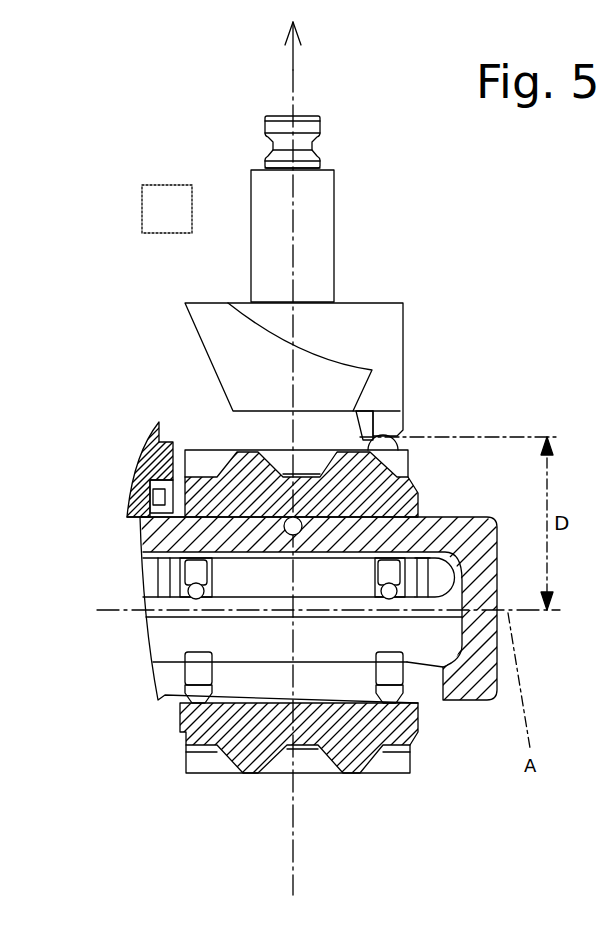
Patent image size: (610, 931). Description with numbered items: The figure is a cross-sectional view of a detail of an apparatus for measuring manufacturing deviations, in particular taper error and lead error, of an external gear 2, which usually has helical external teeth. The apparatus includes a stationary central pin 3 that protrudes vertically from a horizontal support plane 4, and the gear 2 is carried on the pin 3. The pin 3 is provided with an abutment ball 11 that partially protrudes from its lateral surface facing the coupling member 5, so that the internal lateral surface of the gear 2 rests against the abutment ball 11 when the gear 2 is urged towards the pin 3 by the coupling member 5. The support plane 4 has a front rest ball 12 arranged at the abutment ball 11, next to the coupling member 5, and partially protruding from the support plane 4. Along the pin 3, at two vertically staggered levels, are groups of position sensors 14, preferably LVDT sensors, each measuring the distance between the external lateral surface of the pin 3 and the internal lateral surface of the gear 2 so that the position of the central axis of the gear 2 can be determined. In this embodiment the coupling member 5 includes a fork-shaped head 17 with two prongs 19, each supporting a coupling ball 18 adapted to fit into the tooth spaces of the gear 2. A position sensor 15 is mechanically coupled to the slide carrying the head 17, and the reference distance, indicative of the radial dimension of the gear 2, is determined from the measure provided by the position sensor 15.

The external gear 2 is at (145, 729).
The stationary central pin 3 is at (472, 540).
The horizontal support plane 4 is at (150, 462).
The coupling member 5 is at (432, 234).
The abutment ball 11 is at (284, 527).
The front rest ball 12 is at (176, 486).
The position sensors 14 is at (195, 670).
The position sensor 15 is at (240, 210).
The head 17 is at (385, 331).
The coupling balls 18 is at (391, 441).
The prongs 19 is at (392, 421).